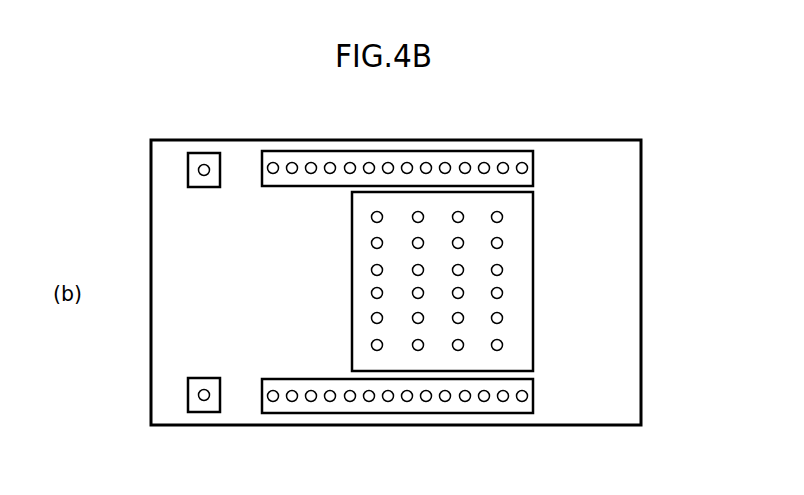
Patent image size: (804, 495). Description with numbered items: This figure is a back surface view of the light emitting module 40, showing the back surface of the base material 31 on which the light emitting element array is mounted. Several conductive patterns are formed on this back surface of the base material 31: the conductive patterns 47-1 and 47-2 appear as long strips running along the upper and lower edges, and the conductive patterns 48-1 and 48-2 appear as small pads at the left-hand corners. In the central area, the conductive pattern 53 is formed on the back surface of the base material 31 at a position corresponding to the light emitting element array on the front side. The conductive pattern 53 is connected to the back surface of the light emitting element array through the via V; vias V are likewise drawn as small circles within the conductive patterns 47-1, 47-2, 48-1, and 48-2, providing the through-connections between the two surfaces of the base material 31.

The light emitting module 40 is at (396, 280).
The base material 31 is at (641, 256).
The conductive pattern 53 is at (534, 340).
The conductive pattern 47-1 is at (437, 152).
The conductive pattern 47-2 is at (452, 413).
The conductive pattern 48-1 is at (188, 165).
The conductive pattern 48-2 is at (188, 392).
The via V is at (208, 165).